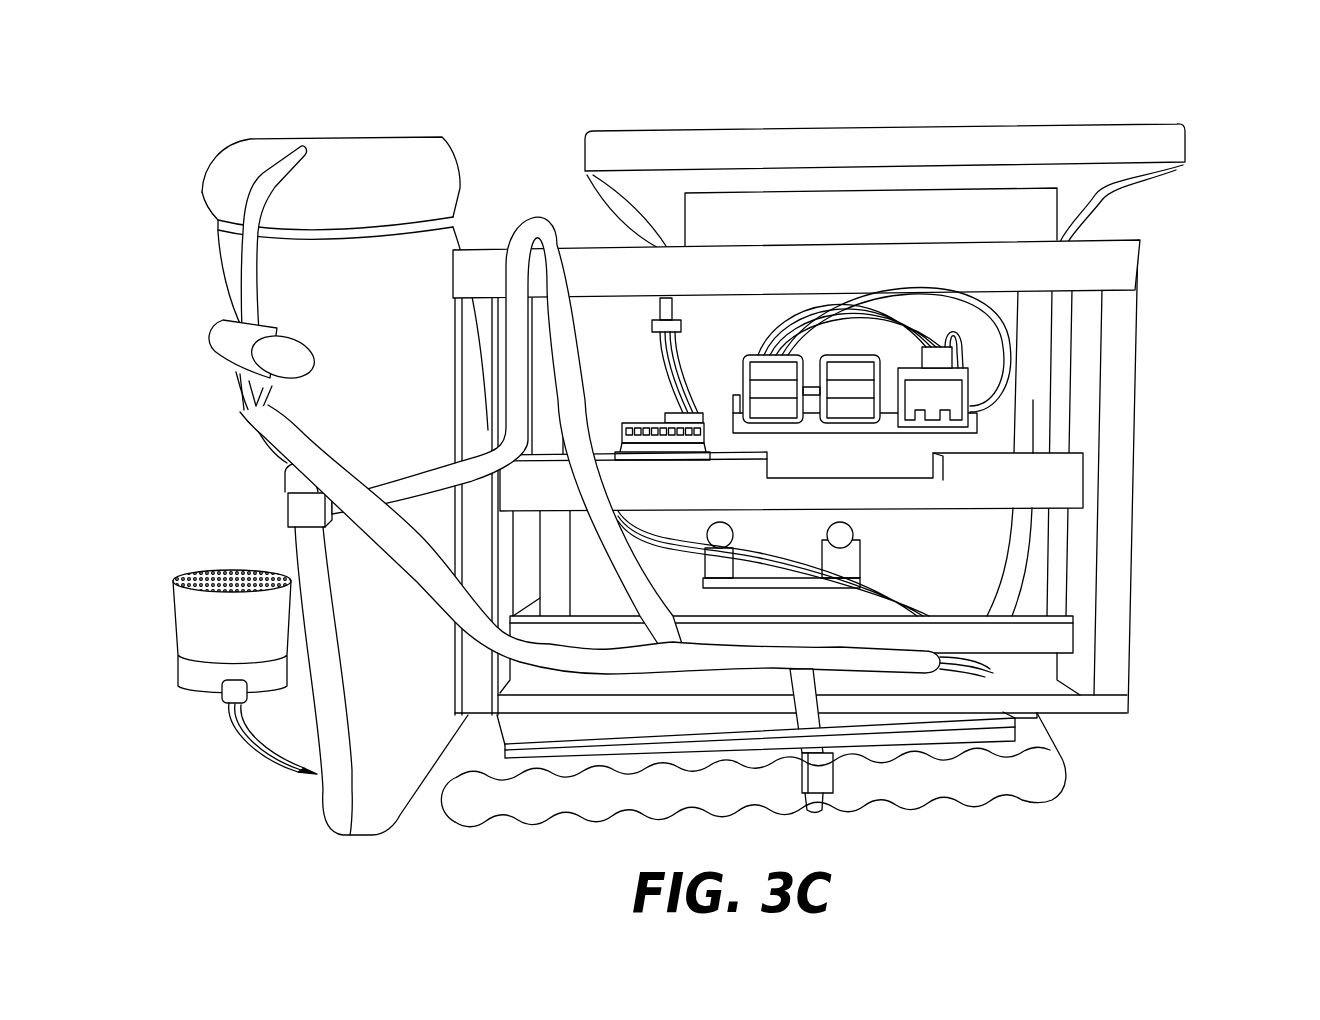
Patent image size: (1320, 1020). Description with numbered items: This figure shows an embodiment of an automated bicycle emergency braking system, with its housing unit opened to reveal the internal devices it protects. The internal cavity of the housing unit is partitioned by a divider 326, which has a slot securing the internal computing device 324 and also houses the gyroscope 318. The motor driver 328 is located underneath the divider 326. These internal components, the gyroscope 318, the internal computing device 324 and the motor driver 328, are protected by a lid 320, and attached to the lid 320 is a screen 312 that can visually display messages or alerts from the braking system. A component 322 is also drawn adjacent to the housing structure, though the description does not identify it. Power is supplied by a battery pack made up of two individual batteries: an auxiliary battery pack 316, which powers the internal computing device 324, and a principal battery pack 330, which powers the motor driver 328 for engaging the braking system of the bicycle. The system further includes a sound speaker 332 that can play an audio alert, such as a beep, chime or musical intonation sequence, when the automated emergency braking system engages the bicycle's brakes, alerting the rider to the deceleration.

The screen 312 is at (761, 111).
The auxiliary battery pack 316 is at (192, 155).
The gyroscope 318 is at (653, 410).
The lid 320 is at (1079, 266).
The frame 322 is at (1150, 310).
The internal computing device 324 is at (969, 409).
The divider 326 is at (1083, 483).
The motor driver 328 is at (859, 557).
The principal battery pack 330 is at (1078, 778).
The sound speaker 332 is at (203, 560).